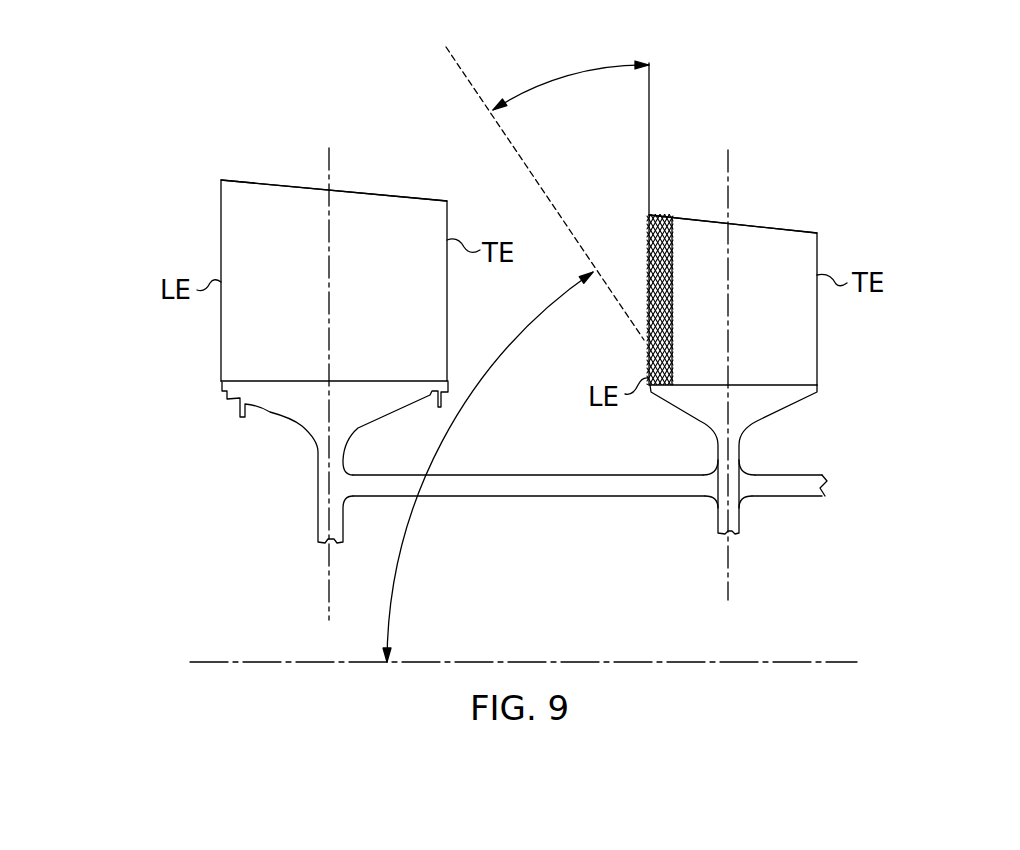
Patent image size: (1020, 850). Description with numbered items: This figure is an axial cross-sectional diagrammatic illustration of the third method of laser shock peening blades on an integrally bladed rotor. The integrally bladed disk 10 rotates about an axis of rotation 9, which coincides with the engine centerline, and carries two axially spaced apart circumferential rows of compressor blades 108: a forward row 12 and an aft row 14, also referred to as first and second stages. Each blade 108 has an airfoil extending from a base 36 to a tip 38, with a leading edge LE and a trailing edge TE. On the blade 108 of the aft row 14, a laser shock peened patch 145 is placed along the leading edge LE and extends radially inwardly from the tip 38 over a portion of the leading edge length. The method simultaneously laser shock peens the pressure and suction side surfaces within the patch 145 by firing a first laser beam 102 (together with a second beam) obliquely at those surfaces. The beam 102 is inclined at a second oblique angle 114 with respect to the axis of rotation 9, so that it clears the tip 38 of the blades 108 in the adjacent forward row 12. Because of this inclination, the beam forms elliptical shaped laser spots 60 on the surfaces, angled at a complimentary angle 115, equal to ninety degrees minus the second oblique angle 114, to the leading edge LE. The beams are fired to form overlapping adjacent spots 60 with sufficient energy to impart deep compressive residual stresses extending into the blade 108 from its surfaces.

The axis of rotation 9 is at (593, 662).
The integrally bladed disk 10 is at (555, 497).
The forward row 12 is at (288, 417).
The aft row 14 is at (780, 412).
The base 36 is at (372, 380).
The tip 38 is at (407, 190).
The elliptical shaped laser spots 60 is at (660, 214).
The first laser beam 102 is at (457, 65).
The compressor blade 108 is at (258, 181).
The second oblique angle 114 is at (488, 372).
The complimentary angle 115 is at (573, 78).
The laser shock peened patch 145 is at (675, 293).